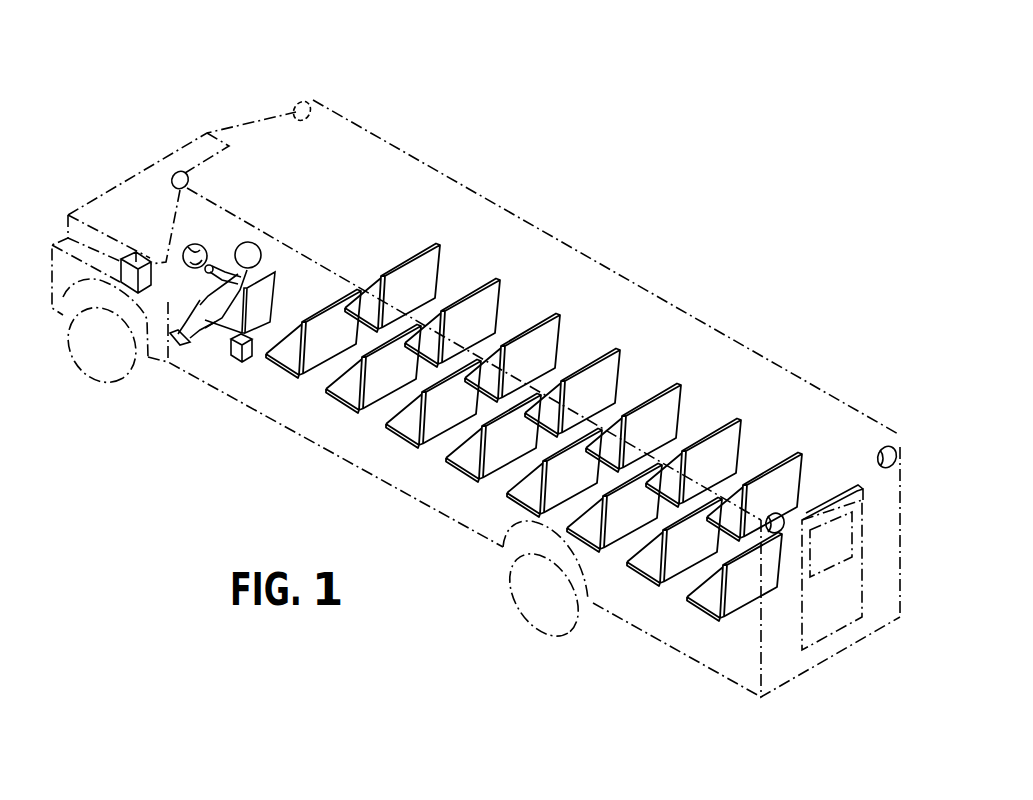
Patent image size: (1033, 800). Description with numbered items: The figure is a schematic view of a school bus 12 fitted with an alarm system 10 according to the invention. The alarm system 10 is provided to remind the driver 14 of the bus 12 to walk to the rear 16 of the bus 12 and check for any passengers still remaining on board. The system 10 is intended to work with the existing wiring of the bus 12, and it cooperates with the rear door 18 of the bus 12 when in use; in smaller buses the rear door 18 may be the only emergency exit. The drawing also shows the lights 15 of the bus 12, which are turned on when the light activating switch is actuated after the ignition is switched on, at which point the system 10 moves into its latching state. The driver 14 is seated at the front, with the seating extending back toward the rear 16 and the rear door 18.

The alarm system 10 is at (137, 253).
The bus 12 is at (413, 152).
The driver 14 is at (248, 250).
The lights 15 is at (302, 100).
The rear 16 is at (881, 583).
The rear door 18 is at (848, 614).